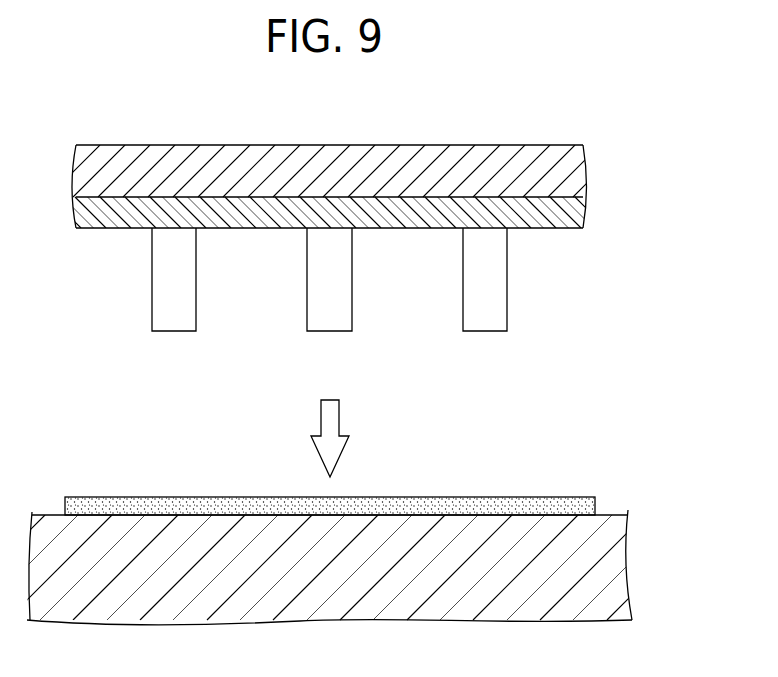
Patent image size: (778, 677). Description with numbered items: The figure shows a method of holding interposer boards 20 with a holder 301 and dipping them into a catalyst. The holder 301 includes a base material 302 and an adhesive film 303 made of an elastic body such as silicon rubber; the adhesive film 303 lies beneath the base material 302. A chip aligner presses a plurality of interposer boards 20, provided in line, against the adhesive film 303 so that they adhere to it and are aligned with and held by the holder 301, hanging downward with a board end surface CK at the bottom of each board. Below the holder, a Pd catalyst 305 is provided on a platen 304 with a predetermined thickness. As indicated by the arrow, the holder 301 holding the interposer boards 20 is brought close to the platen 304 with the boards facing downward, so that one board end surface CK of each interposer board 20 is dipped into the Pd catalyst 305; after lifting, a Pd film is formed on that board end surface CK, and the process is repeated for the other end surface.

The holder 301 is at (396, 181).
The base material 302 is at (578, 168).
The adhesive film 303 is at (575, 218).
The interposer board 20 is at (358, 323).
The board end surface CK is at (173, 333).
The platen 304 is at (607, 572).
The Pd catalyst 305 is at (582, 501).